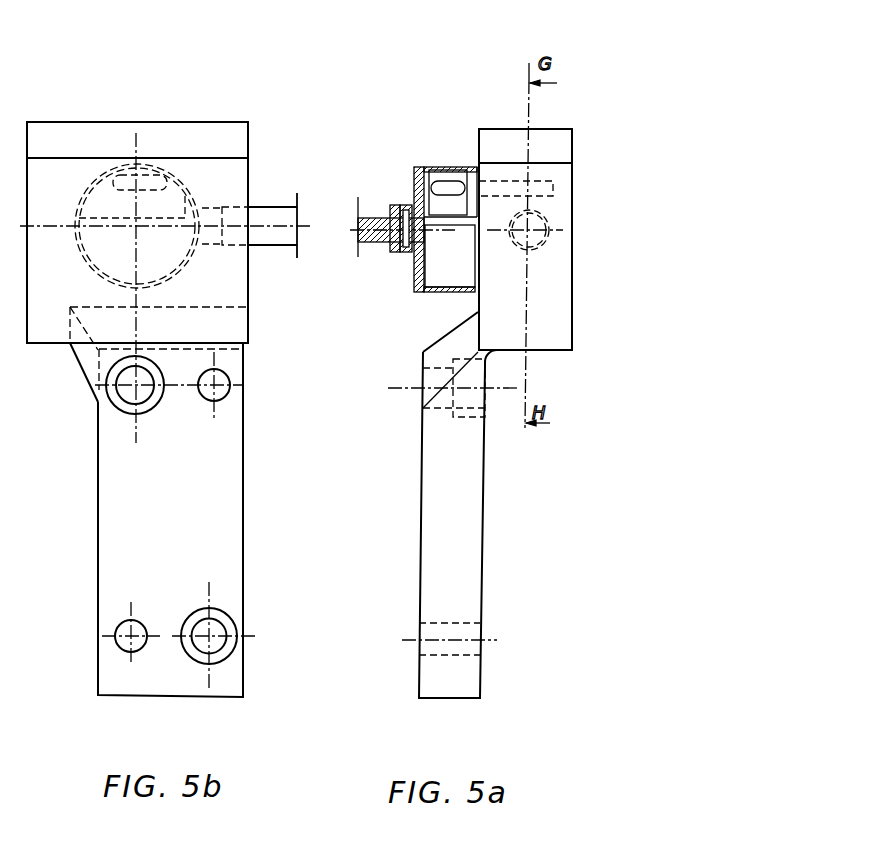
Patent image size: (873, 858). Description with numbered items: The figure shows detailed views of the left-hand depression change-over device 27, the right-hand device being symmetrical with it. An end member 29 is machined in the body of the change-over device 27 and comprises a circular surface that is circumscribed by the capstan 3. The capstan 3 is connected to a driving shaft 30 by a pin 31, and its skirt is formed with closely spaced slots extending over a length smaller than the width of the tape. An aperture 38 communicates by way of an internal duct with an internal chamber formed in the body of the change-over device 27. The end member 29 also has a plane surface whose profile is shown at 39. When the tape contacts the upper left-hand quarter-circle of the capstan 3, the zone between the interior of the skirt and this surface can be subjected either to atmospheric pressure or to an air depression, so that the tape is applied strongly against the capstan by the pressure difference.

In FIG. 5a, the capstan 3 is at (418, 167).
In FIG. 5a, the depression change-over device 27 is at (480, 565).
In FIG. 5a, the end member 29 is at (441, 221).
In FIG. 5a, the driving shaft 30 is at (375, 242).
In FIG. 5a, the pin 31 is at (404, 253).
In FIG. 5a, the aperture 38 is at (448, 187).
In FIG. 5b, the profile of plane surface 39 is at (128, 191).